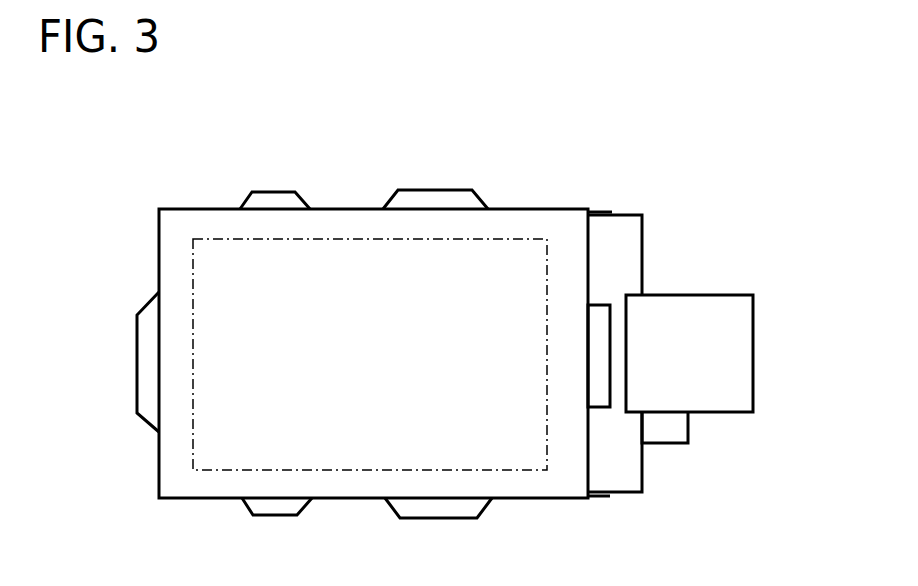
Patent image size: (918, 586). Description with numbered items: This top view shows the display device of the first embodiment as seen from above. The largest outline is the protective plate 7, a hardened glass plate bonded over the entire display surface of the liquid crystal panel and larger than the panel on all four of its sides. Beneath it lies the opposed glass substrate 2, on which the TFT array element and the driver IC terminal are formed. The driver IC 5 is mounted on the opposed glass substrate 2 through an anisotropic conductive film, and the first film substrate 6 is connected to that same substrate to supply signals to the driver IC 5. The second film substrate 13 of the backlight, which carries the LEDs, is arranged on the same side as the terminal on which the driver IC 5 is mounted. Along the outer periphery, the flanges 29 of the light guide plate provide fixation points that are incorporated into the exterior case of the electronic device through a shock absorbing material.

The opposed glass substrate 2 is at (625, 307).
The driver IC 5 is at (666, 433).
The first film substrate 6 is at (689, 305).
The protective plate 7 is at (362, 306).
The second film substrate 13 is at (713, 454).
The flange 29 is at (289, 151).